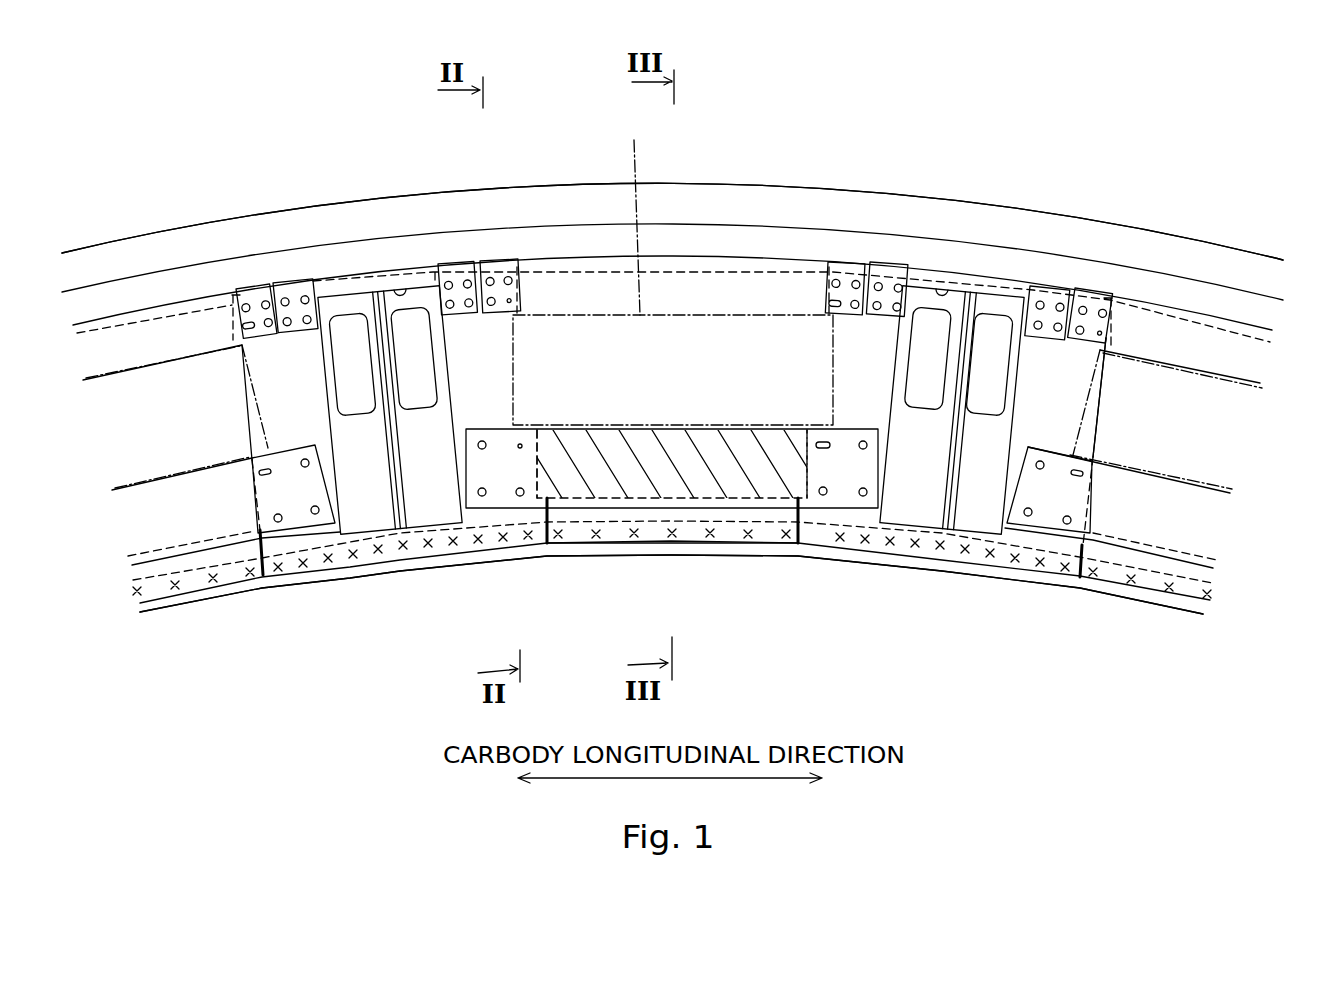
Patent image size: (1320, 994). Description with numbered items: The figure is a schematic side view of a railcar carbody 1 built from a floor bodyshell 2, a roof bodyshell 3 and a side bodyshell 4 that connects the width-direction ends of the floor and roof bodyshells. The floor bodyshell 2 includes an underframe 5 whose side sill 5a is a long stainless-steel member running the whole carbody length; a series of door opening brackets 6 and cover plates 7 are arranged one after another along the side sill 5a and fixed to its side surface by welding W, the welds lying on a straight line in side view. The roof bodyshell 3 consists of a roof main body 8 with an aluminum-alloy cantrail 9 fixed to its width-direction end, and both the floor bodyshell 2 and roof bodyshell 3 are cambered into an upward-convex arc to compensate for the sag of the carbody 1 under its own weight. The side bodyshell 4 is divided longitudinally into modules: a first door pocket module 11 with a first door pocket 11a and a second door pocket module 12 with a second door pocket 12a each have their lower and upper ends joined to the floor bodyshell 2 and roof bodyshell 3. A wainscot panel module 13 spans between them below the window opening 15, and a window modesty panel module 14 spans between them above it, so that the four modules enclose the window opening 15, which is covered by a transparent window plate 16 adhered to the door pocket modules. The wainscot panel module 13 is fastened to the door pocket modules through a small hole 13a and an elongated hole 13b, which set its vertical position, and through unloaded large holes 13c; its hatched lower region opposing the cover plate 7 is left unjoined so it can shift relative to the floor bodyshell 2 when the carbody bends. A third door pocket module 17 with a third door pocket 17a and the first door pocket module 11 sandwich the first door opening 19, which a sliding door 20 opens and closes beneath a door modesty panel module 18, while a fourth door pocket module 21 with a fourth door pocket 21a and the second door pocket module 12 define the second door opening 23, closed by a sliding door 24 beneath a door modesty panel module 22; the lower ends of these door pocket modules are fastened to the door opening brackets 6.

The carbody 1 is at (305, 112).
The floor bodyshell 2 is at (1088, 607).
The roof bodyshell 3 is at (1174, 220).
The side bodyshell 4 is at (1070, 363).
The underframe 5 is at (987, 580).
The side sill 5a is at (1012, 590).
The door opening bracket 6 is at (315, 560).
The cover plate 7 is at (728, 535).
The roof main body 8 is at (763, 190).
The cantrail 9 is at (782, 250).
The first door pocket module 11 is at (487, 350).
The first door pocket 11a is at (462, 320).
The second door pocket module 12 is at (857, 350).
The second door pocket 12a is at (877, 330).
The wainscot panel module 13 is at (620, 463).
The small hole 13a is at (520, 497).
The elongated hole 13b is at (823, 497).
The large holes 13c is at (482, 452).
The window modesty panel module 14 is at (717, 270).
The window opening 15 is at (582, 337).
The window plate 16 is at (635, 213).
The third door pocket module 17 is at (275, 380).
The third door pocket 17a is at (292, 345).
The door modesty panel module 18 is at (332, 268).
The first door opening 19 is at (396, 290).
The door 20 is at (378, 515).
The fourth door pocket module 21 is at (1050, 350).
The fourth door pocket 21a is at (1055, 433).
The door modesty panel module 22 is at (1015, 275).
The second door opening 23 is at (950, 288).
The door 24 is at (965, 517).
The welding W is at (423, 510).